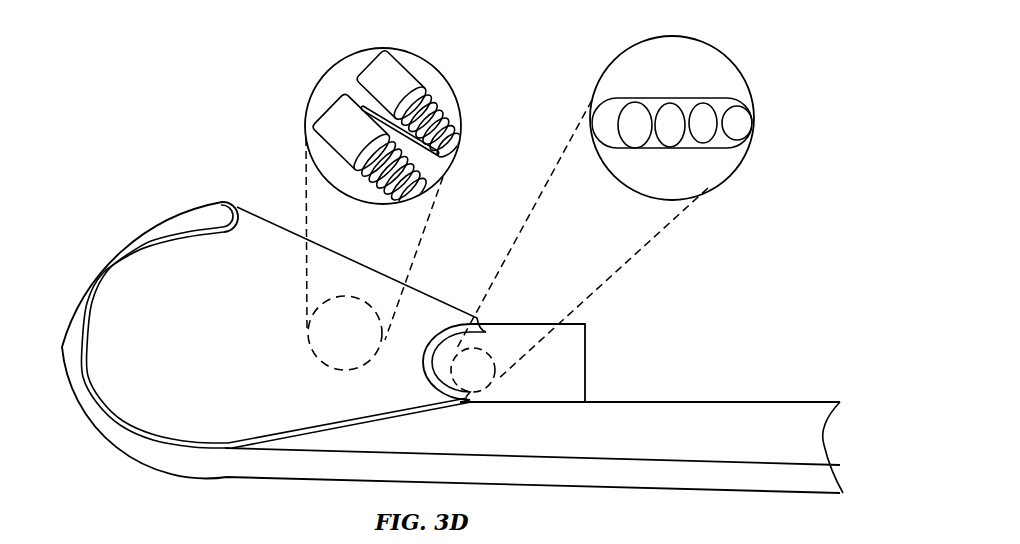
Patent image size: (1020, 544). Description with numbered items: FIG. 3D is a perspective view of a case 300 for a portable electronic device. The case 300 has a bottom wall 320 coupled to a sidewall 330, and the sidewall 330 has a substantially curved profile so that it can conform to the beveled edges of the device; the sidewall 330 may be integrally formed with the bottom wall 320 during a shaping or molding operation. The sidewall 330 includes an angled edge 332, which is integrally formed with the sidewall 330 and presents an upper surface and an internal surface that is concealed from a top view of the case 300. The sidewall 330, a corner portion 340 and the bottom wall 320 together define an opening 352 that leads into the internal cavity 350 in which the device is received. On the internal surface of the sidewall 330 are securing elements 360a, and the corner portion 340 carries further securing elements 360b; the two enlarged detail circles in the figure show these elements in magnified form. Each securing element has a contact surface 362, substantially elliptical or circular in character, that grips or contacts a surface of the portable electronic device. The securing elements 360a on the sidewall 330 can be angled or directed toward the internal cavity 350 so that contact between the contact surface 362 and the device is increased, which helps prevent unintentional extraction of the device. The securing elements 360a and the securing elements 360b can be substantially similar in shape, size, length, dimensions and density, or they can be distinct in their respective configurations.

The case 300 is at (262, 156).
The bottom wall 320 is at (599, 434).
The sidewall 330 is at (277, 360).
The angled edge 332 is at (338, 265).
The corner portion 340 is at (564, 395).
The internal cavity 350 is at (700, 415).
The opening 352 is at (740, 362).
The securing elements 360a is at (405, 186).
The securing elements 360b is at (683, 143).
The contact surface 362 is at (458, 155).